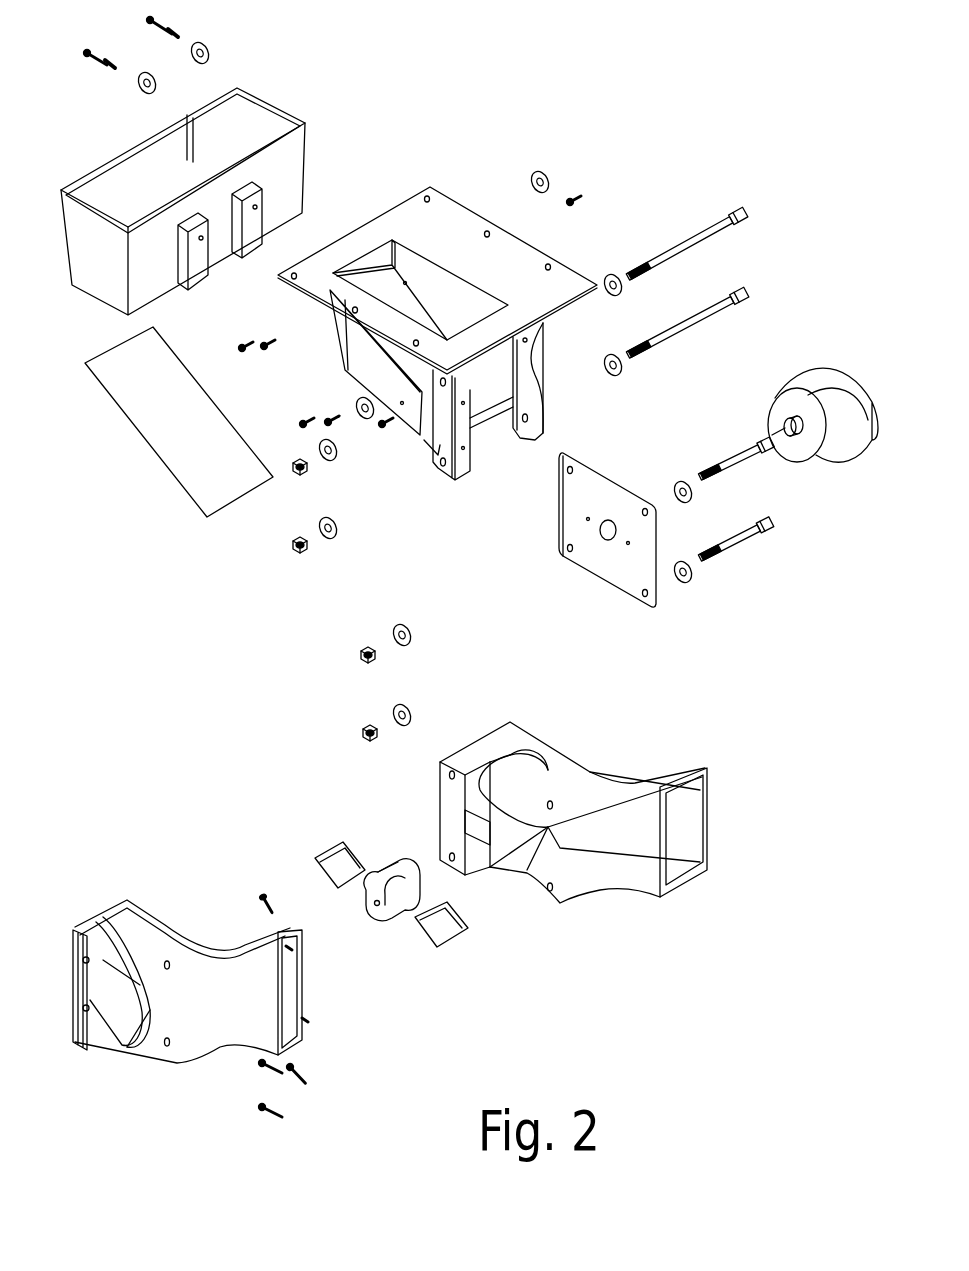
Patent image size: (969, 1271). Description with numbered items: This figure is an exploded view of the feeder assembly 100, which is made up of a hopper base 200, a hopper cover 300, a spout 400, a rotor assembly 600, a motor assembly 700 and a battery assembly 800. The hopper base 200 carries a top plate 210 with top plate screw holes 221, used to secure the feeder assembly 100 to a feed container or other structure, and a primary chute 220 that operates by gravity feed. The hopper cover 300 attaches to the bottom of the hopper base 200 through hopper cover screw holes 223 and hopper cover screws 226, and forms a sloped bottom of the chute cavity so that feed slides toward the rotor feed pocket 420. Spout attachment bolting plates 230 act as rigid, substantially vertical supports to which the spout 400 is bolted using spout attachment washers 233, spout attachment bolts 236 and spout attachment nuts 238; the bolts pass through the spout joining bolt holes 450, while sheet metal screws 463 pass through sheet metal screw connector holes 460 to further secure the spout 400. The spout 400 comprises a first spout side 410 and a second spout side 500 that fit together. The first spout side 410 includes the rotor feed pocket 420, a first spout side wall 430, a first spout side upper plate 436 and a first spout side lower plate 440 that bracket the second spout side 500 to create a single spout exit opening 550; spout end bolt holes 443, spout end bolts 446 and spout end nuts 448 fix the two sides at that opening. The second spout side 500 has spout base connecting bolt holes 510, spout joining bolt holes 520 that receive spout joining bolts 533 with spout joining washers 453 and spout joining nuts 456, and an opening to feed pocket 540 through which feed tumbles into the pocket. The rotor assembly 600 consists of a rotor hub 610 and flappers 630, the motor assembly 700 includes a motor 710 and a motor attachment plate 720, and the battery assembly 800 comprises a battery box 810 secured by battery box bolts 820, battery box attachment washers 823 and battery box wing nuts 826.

The feeder assembly 100 is at (372, 44).
The hopper base 200 is at (395, 205).
The top plate 210 is at (450, 210).
The primary chute 220 is at (448, 292).
The top plate screw holes 221 is at (490, 238).
The hopper cover screw holes 223 is at (160, 475).
The hopper cover screws 226 is at (268, 352).
The spout attachment bolting plates 230 is at (520, 433).
The spout attachment washers 233 is at (606, 357).
The spout attachment bolts 236 is at (672, 262).
The spout attachment nuts 238 is at (292, 540).
The hopper cover 300 is at (195, 512).
The spout 400 is at (309, 996).
The first spout side 410 is at (170, 918).
The rotor feed pocket 420 is at (115, 1048).
The first spout side wall 430 is at (248, 1012).
The first spout side upper plate 436 is at (292, 948).
The first spout side lower plate 440 is at (305, 1045).
The spout end bolt holes 443 is at (290, 942).
The spout end bolts 446 is at (262, 912).
The spout end nuts 448 is at (335, 1010).
The spout joining bolt holes 450 is at (167, 1038).
The spout joining washers 453 is at (683, 512).
The spout joining nuts 456 is at (365, 722).
The sheet metal screw connector holes 460 is at (83, 1000).
The sheet metal screws 463 is at (262, 1104).
The second spout side 500 is at (555, 745).
The spout base connecting bolt holes 510 is at (448, 776).
The spout joining bolt holes 520 is at (548, 800).
The spout joining bolts 533 is at (735, 530).
The opening to feed pocket 540 is at (462, 825).
The spout exit opening 550 is at (700, 825).
The rotor assembly 600 is at (385, 862).
The rotor hub 610 is at (385, 922).
The flappers 630 is at (315, 862).
The motor assembly 700 is at (808, 465).
The motor 710 is at (770, 405).
The motor attachment plate 720 is at (618, 497).
The battery assembly 800 is at (260, 86).
The battery box 810 is at (306, 122).
The battery box bolts 820 is at (118, 24).
The battery box attachment washers 823 is at (200, 75).
The battery box wing nuts 826 is at (580, 198).